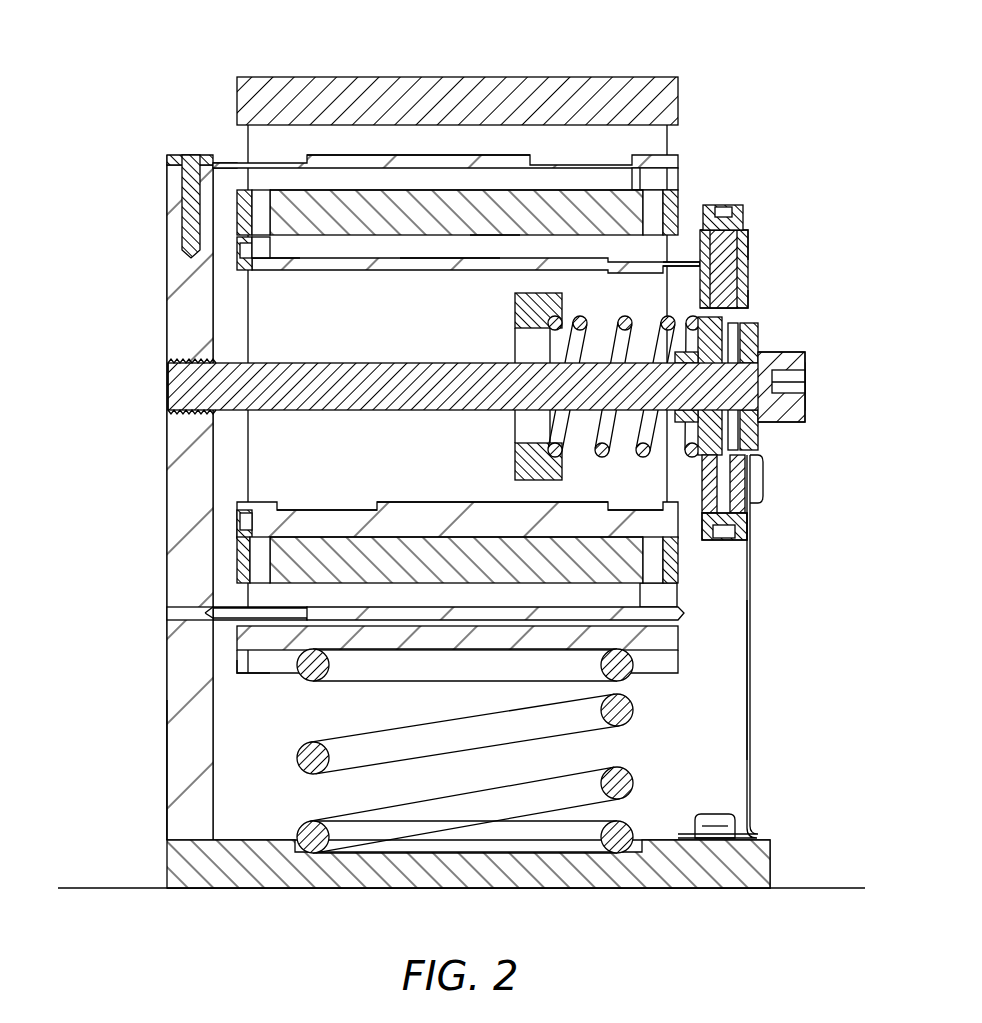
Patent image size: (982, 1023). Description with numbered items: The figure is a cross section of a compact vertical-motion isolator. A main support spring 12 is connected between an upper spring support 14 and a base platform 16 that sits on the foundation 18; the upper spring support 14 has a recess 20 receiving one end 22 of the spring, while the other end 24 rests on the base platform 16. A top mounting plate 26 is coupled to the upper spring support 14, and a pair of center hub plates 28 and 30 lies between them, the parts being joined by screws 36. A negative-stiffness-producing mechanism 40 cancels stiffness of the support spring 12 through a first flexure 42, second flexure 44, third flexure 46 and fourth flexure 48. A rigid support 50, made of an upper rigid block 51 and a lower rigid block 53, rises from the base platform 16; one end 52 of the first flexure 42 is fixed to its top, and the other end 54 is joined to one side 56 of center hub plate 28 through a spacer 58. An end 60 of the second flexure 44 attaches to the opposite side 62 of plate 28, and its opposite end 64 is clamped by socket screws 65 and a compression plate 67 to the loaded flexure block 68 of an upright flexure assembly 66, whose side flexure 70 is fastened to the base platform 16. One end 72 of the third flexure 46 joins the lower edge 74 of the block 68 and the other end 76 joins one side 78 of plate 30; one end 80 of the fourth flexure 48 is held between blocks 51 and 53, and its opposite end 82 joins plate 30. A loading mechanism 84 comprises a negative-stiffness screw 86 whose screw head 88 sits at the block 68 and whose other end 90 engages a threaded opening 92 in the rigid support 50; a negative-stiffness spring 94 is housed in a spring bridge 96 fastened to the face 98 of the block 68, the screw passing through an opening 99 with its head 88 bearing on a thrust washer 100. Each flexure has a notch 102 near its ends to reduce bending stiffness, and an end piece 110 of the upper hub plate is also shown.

The main support spring 12 is at (300, 757).
The upper spring support 14 is at (240, 640).
The base platform 16 is at (770, 862).
The foundation 18 is at (100, 887).
The recess 20 is at (263, 657).
The end of support spring 22 is at (633, 665).
The other end of support spring 24 is at (318, 845).
The top mounting plate 26 is at (280, 77).
The center hub plate 28 is at (283, 208).
The second center hub plate 30 is at (280, 560).
The screws 36 is at (190, 156).
The negative-stiffness-producing mechanism 40 is at (818, 363).
The first flexure 42 is at (503, 155).
The second flexure 44 is at (450, 270).
The third flexure 46 is at (395, 502).
The fourth flexure 48 is at (370, 610).
The rigid support 50 is at (145, 500).
The upper rigid block 51 is at (167, 468).
The end of first flexure 52 is at (170, 158).
The lower rigid block 53 is at (167, 800).
The other end of first flexure 54 is at (675, 160).
The side of center hub plate 56 is at (407, 190).
The spacer 58 is at (237, 247).
The end of second flexure 60 is at (283, 260).
The opposite side of center hub plate 62 is at (473, 238).
The opposite end of second flexure 64 is at (748, 260).
The socket screws 65 is at (742, 208).
The upright flexure assembly 66 is at (766, 645).
The compression plate 67 is at (748, 240).
The loaded flexure block 68 is at (750, 290).
The side flexure 70 is at (752, 745).
The end of third flexure 72 is at (750, 512).
The lower edge of loaded flexure block 74 is at (705, 505).
The other end of third flexure 76 is at (285, 510).
The side of second center hub plate 78 is at (423, 537).
The end of fourth flexure 80 is at (205, 612).
The opposite end of fourth flexure 82 is at (677, 613).
The loading mechanism 84 is at (818, 412).
The negative-stiffness screw 86 is at (357, 368).
The screw head 88 is at (765, 440).
The other end of negative-stiffness screw 90 is at (190, 390).
The threaded opening 92 is at (190, 382).
The negative-stiffness spring 94 is at (603, 450).
The negative-stiffness spring bridge 96 is at (518, 320).
The face of loaded flexure block 98 is at (705, 290).
The opening 99 is at (700, 410).
The thrust washer 100 is at (758, 458).
The notch 102 is at (587, 163).
The upper block end piece 110 is at (678, 210).